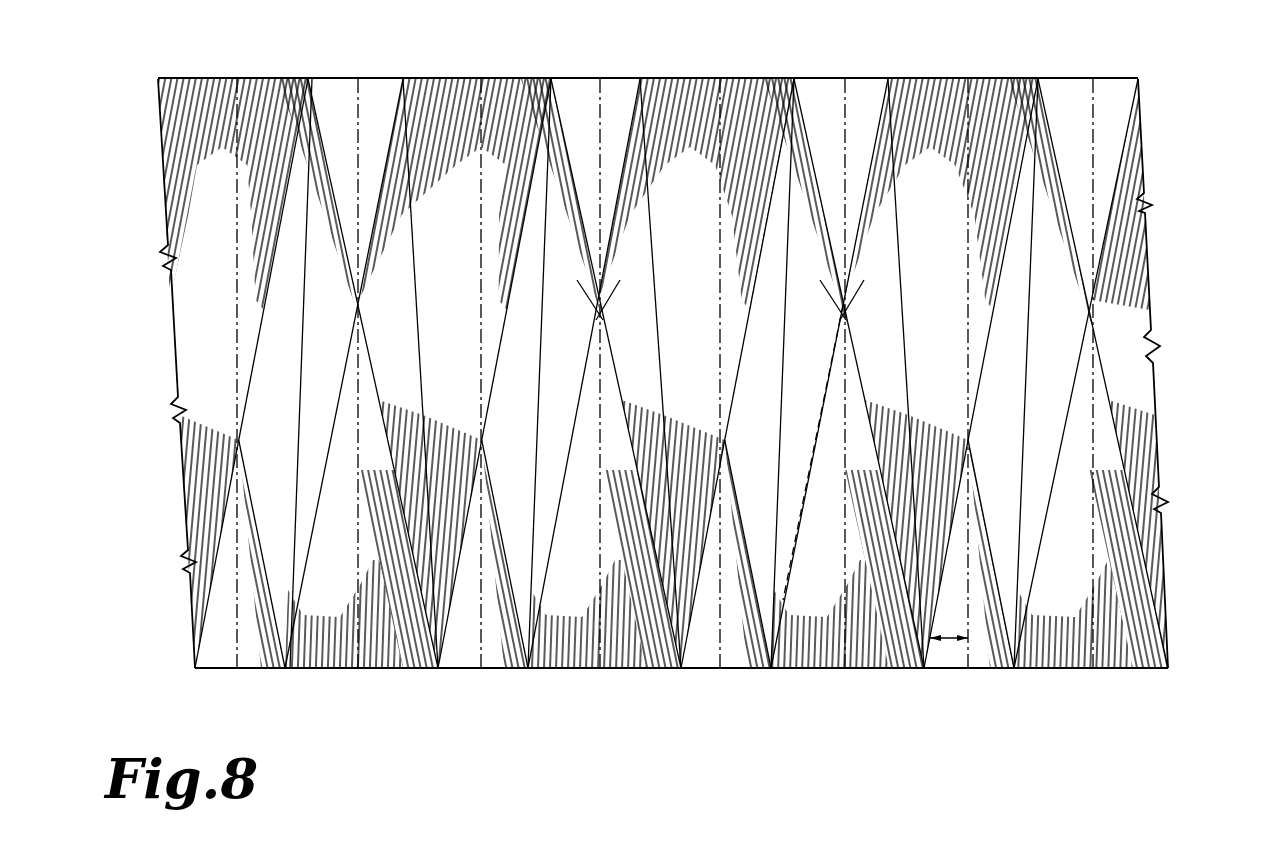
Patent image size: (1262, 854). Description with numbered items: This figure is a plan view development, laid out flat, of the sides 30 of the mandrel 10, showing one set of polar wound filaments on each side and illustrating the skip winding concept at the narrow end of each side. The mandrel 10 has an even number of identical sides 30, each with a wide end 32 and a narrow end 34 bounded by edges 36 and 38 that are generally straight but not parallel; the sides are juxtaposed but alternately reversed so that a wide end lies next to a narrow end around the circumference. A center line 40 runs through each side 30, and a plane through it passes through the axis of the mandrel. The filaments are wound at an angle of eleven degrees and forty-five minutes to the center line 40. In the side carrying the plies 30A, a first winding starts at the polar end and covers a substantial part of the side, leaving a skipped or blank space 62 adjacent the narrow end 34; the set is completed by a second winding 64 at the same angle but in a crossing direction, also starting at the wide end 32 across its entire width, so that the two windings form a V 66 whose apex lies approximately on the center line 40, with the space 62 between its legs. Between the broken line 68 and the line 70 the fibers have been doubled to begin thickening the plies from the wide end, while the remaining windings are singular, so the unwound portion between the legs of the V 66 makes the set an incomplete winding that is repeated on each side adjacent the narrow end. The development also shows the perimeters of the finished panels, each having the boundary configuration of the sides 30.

The mandrel 10 is at (1174, 376).
The mandrel side 30 is at (1009, 309).
The plies 30A is at (875, 640).
The wide end 32 is at (280, 64).
The narrow end 34 is at (335, 79).
The edge 36 is at (298, 376).
The edge 38 is at (420, 356).
The center line 40 is at (607, 100).
The skipped or blank space 62 is at (825, 100).
The second winding 64 is at (813, 620).
The V 66 is at (596, 272).
The broken line 68 is at (824, 405).
The line 70 is at (860, 377).